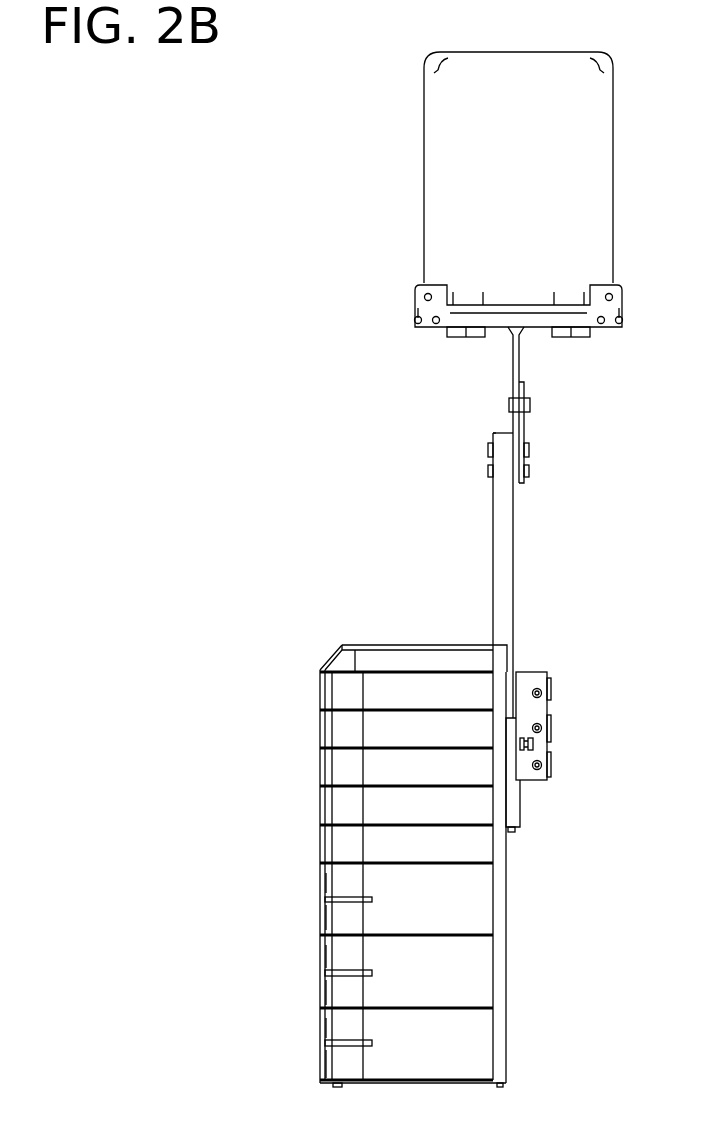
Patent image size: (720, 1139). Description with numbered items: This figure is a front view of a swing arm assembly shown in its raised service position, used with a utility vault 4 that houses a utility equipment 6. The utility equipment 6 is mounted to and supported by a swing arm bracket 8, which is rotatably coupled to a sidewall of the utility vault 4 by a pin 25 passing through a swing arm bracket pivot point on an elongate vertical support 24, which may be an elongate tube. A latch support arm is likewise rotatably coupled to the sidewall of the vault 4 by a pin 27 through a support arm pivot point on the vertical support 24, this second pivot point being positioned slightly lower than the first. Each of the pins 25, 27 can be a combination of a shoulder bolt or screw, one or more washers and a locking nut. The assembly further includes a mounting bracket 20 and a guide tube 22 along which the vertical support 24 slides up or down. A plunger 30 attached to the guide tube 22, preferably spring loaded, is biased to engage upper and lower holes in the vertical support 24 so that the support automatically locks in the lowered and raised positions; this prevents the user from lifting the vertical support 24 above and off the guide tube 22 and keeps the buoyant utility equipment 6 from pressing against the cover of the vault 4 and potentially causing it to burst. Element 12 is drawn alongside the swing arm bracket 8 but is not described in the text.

The utility vault 4 is at (320, 766).
The utility equipment 6 is at (525, 200).
The swing arm bracket 8 is at (520, 368).
The clamp 12 is at (530, 405).
The mounting bracket 20 is at (530, 672).
The guide tube 22 is at (520, 815).
The elongate vertical support 24 is at (514, 553).
The pin 25 is at (493, 436).
The pin 27 is at (488, 462).
The plunger 30 is at (534, 745).